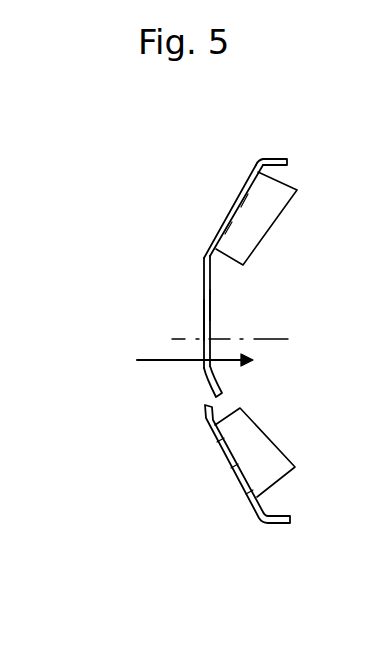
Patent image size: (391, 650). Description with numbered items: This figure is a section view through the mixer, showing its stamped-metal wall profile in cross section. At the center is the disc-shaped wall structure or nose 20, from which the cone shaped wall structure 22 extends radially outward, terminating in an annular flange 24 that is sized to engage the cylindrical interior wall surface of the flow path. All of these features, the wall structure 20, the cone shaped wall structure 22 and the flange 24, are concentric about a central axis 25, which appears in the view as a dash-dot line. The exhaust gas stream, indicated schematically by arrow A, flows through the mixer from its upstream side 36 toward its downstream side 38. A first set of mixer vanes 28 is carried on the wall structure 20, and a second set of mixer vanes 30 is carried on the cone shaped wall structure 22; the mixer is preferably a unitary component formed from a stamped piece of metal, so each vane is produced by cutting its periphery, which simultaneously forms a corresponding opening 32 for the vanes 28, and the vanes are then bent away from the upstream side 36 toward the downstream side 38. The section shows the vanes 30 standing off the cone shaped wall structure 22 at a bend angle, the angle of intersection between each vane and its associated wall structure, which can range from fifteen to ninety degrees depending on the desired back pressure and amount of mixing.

The disc-shaped wall structure 20 is at (203, 288).
The cone shaped wall structure 22 is at (215, 229).
The annular flange 24 is at (270, 153).
The central axis 25 is at (288, 338).
The mixer vane 28 is at (200, 393).
The mixer vane 30 is at (270, 204).
The opening 32 is at (203, 400).
The upstream side 36 is at (203, 317).
The downstream side 38 is at (212, 303).
The exhaust gas stream A is at (147, 362).